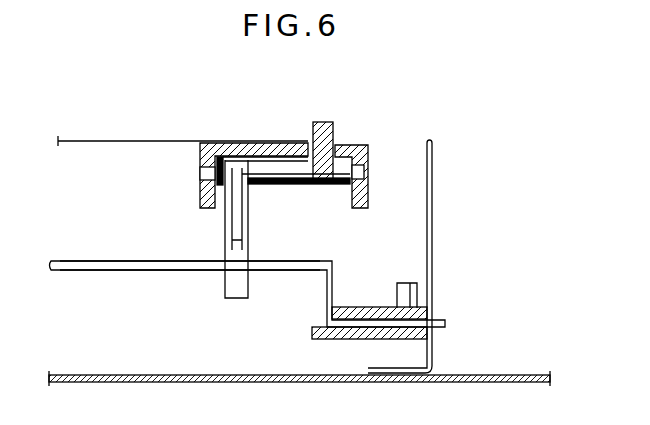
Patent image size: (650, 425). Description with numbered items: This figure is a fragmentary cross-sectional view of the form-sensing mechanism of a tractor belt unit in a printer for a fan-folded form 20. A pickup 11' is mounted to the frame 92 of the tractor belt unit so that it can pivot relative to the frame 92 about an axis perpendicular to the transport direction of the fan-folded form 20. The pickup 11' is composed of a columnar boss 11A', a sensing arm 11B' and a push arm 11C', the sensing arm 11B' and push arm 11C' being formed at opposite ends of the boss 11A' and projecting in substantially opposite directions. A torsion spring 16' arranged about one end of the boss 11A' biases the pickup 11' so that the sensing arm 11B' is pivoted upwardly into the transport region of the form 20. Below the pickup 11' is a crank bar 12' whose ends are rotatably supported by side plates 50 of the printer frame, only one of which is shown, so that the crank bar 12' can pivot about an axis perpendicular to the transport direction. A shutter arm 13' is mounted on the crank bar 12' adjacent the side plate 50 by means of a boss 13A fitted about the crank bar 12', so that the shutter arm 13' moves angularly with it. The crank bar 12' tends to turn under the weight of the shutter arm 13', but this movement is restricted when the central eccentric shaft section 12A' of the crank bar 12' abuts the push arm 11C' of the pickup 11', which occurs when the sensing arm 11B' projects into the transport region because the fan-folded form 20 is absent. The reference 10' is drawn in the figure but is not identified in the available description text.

The fan-folded form 20 is at (91, 141).
The frame 92 is at (200, 157).
The torsion spring 16' is at (231, 184).
The pickup 11' is at (273, 229).
The push arm 11C' is at (356, 209).
The hatched column member 10' is at (356, 128).
The sensing arm 11B' is at (406, 160).
The columnar boss 11A' is at (360, 184).
The side plate 50 is at (433, 257).
The crank bar 12' is at (248, 310).
The eccentric shaft section 12A' is at (190, 296).
The boss 13A is at (343, 341).
The shutter arm 13' is at (347, 372).